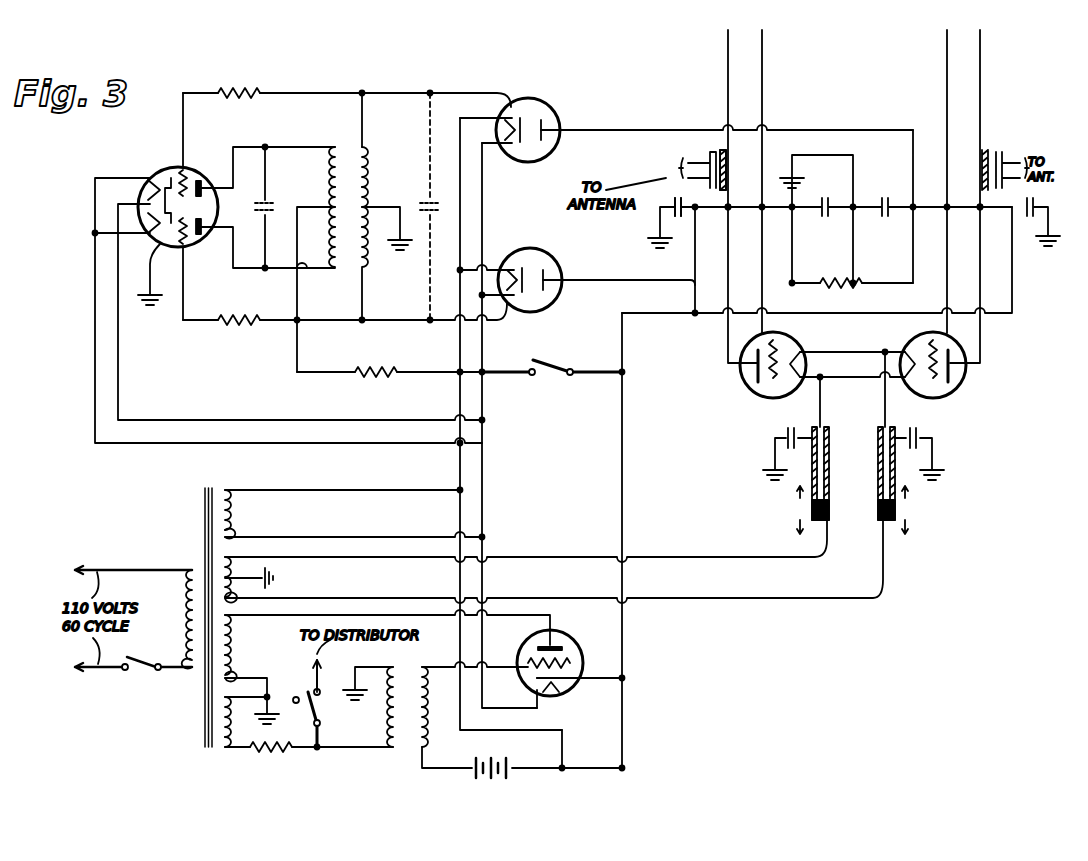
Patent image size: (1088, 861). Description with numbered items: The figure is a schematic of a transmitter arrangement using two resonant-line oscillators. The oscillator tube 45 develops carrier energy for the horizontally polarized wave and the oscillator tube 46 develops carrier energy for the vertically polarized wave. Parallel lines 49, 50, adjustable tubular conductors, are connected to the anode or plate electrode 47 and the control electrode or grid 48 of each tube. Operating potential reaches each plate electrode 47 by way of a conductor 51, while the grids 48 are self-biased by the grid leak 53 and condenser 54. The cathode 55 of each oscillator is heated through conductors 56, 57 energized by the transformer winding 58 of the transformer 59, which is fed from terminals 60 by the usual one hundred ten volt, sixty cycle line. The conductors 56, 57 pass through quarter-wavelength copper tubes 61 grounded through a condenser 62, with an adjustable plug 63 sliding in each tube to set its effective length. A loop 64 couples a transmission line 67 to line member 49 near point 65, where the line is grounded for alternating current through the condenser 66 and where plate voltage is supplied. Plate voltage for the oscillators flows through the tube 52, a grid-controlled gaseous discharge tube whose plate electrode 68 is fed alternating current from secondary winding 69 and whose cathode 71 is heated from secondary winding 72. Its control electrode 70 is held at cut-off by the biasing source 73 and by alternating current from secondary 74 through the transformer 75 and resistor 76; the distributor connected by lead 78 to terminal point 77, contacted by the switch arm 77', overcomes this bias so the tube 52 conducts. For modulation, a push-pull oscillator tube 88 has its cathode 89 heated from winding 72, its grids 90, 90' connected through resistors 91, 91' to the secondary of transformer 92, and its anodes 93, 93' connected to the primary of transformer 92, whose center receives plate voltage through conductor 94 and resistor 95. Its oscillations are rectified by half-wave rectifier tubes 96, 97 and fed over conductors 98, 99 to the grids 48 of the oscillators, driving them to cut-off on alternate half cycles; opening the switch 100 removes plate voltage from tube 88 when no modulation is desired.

The oscillator tube 45 is at (796, 341).
The oscillator tube 46 is at (966, 391).
The anode or plate electrode 47 is at (755, 370).
The control electrode or grid 48 is at (769, 387).
The parallel line 49 is at (728, 98).
The parallel line 50 is at (762, 98).
The conductor 51 is at (622, 491).
The tube 52 is at (564, 644).
The grid leak 53 is at (839, 292).
The condenser 54 is at (825, 197).
The cathode 55 is at (795, 380).
The conductor 56 is at (725, 558).
The conductor 57 is at (714, 598).
The transformer winding 58 is at (262, 578).
The transformer 59 is at (202, 565).
The terminals 60 is at (126, 570).
The copper tube 61 is at (830, 437).
The condenser 62 is at (786, 437).
The adjustable plug 63 is at (830, 523).
The loop 64 is at (710, 165).
The point 65 is at (730, 208).
The condenser 66 is at (676, 222).
The transmission line 67 is at (682, 180).
The plate electrode 68 is at (540, 639).
The secondary winding 69 is at (232, 650).
The control electrode 70 is at (524, 655).
The cathode 71 is at (578, 664).
The transformer secondary winding 72 is at (238, 520).
The biasing source 73 is at (503, 779).
The transformer secondary 74 is at (242, 746).
The transformer 75 is at (418, 752).
The resistor 76 is at (275, 756).
The terminal point 77 is at (329, 719).
The switch arm 77' is at (293, 717).
The lead 78 is at (315, 670).
The push-pull oscillator tube 88 is at (156, 237).
The cathode 89 is at (162, 171).
The grid or control electrode 90 is at (168, 162).
The grid or control electrode 90' is at (171, 249).
The resistor 91 is at (241, 81).
The resistor 91' is at (241, 335).
The transformer 92 is at (344, 270).
The anode element 93 is at (207, 167).
The anode element 93' is at (212, 246).
The conductor 94 is at (298, 349).
The resistor 95 is at (390, 370).
The half-wave rectifier tube 96 is at (560, 108).
The half-wave rectifier tube 97 is at (555, 257).
The conductor 98 is at (582, 130).
The conductor 99 is at (606, 280).
The switch 100 is at (565, 368).